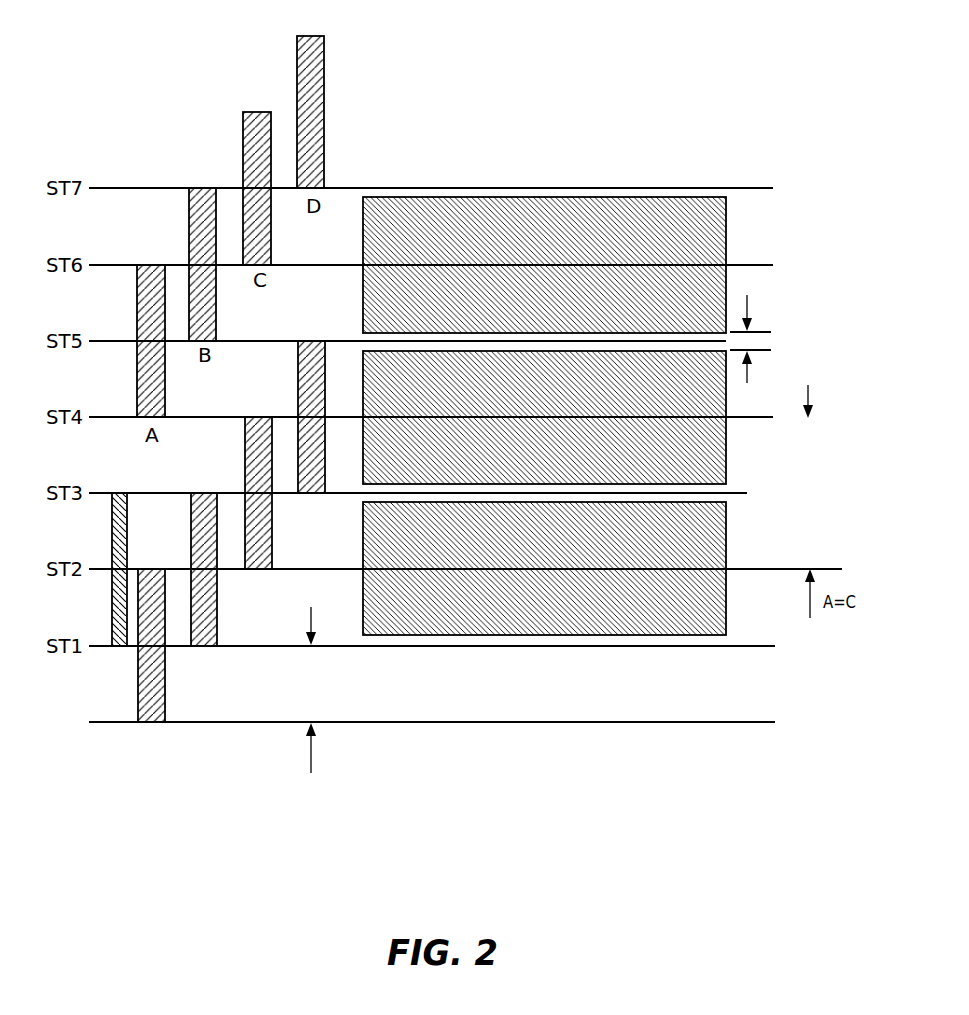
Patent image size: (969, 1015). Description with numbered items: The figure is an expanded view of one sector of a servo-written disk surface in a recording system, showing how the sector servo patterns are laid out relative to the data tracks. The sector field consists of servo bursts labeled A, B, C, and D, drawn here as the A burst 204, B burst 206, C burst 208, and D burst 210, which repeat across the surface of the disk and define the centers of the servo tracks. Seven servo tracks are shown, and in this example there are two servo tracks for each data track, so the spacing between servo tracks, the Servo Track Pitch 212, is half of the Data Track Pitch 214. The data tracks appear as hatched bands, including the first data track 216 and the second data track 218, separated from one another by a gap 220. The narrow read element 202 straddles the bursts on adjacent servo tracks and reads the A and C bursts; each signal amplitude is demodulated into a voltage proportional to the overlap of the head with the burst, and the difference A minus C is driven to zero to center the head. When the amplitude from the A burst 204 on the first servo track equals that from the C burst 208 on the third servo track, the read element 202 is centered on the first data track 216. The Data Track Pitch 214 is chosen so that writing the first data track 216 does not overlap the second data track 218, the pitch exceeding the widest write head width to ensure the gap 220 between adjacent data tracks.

The read element 202 is at (112, 635).
The A burst 204 is at (152, 670).
The B burst 206 is at (205, 593).
The C burst 208 is at (260, 518).
The D burst 210 is at (310, 444).
The servo track pitch 212 is at (309, 690).
The data track pitch 214 is at (808, 501).
The data track 1 216 is at (566, 568).
The data track 2 218 is at (567, 417).
The gap 220 is at (768, 340).